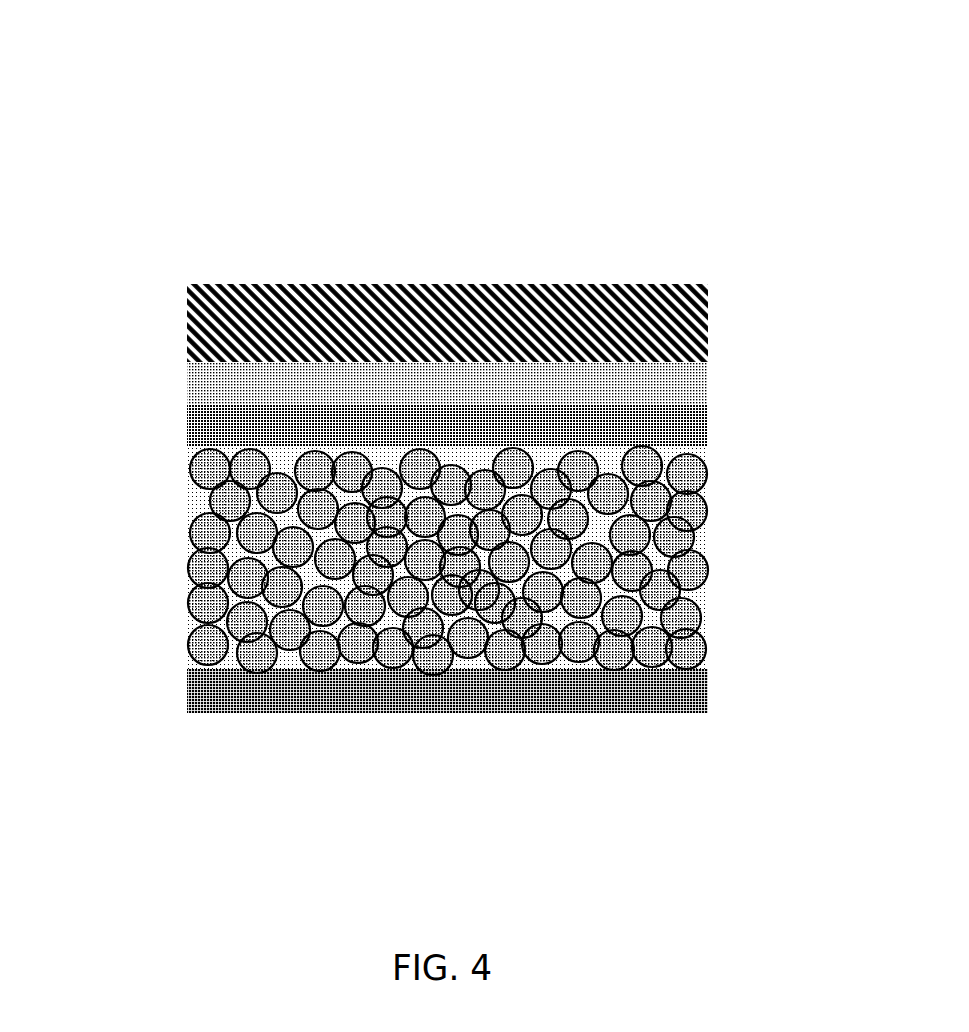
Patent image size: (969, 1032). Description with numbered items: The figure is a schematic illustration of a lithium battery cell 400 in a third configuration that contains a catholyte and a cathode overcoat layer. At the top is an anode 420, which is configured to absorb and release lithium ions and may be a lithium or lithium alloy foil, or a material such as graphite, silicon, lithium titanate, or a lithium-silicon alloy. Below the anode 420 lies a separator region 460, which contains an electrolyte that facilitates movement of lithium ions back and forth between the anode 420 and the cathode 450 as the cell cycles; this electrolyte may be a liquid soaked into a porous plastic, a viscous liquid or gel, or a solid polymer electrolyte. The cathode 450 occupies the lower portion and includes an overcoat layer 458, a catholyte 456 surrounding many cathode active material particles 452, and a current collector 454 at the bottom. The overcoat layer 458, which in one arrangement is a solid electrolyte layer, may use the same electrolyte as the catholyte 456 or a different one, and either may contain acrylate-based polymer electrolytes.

The lithium battery cell 400 is at (256, 210).
The anode 420 is at (233, 350).
The separator region 460 is at (645, 380).
The overcoat layer 458 is at (697, 432).
The catholyte 456 is at (702, 537).
The cathode active material particles 452 is at (497, 552).
The current collector 454 is at (232, 691).
The cathode 450 is at (181, 407).